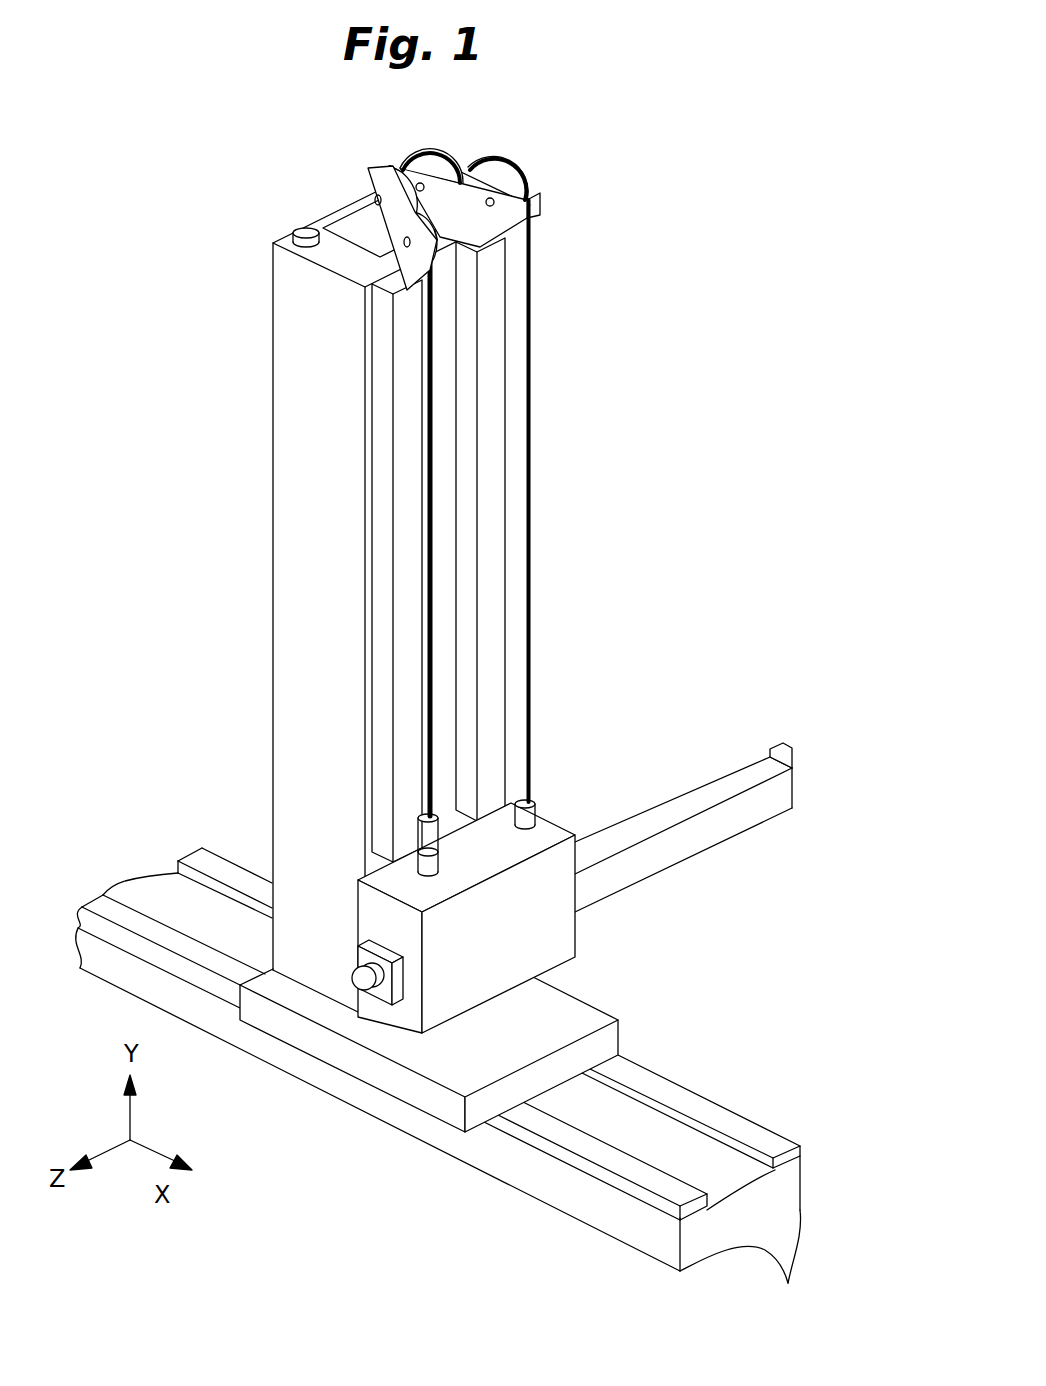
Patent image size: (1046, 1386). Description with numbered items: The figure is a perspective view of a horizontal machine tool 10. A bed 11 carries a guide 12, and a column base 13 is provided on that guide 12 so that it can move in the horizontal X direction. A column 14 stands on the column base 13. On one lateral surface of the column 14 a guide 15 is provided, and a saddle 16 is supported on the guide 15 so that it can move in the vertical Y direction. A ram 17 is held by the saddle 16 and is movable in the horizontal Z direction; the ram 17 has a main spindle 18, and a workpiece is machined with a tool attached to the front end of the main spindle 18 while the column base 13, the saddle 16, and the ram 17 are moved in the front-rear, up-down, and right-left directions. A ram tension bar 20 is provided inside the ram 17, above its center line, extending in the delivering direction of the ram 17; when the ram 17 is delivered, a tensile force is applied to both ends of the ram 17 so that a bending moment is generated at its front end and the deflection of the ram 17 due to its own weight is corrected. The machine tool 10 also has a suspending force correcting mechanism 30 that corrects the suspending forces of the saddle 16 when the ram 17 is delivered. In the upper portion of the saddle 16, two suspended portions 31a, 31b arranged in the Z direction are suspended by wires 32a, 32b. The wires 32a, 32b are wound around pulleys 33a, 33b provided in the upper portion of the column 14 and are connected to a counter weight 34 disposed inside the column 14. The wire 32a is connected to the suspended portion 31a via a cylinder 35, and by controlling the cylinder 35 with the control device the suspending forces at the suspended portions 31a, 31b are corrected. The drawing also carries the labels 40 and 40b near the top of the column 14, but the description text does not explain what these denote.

The horizontal machine tool 10 is at (467, 703).
The bed 11 is at (520, 1180).
The guide 12 is at (788, 1160).
The column base 13 is at (578, 1012).
The column 14 is at (290, 586).
The guide 15 is at (400, 714).
The saddle 16 is at (570, 936).
The ram 17 is at (656, 817).
The main spindle 18 is at (357, 983).
The ram tension bar 20 is at (798, 735).
The suspending force correcting mechanism 30 is at (478, 190).
The suspended portion 31a is at (425, 868).
The suspended portion 31b is at (538, 816).
The wire 32a is at (428, 393).
The wire 32b is at (530, 355).
The pulley 33a is at (352, 240).
The pulley 33b is at (458, 198).
The counter weight 34 is at (347, 238).
The cylinder 35 is at (427, 836).
The stopper 40 is at (254, 219).
The stopper 40b is at (290, 236).